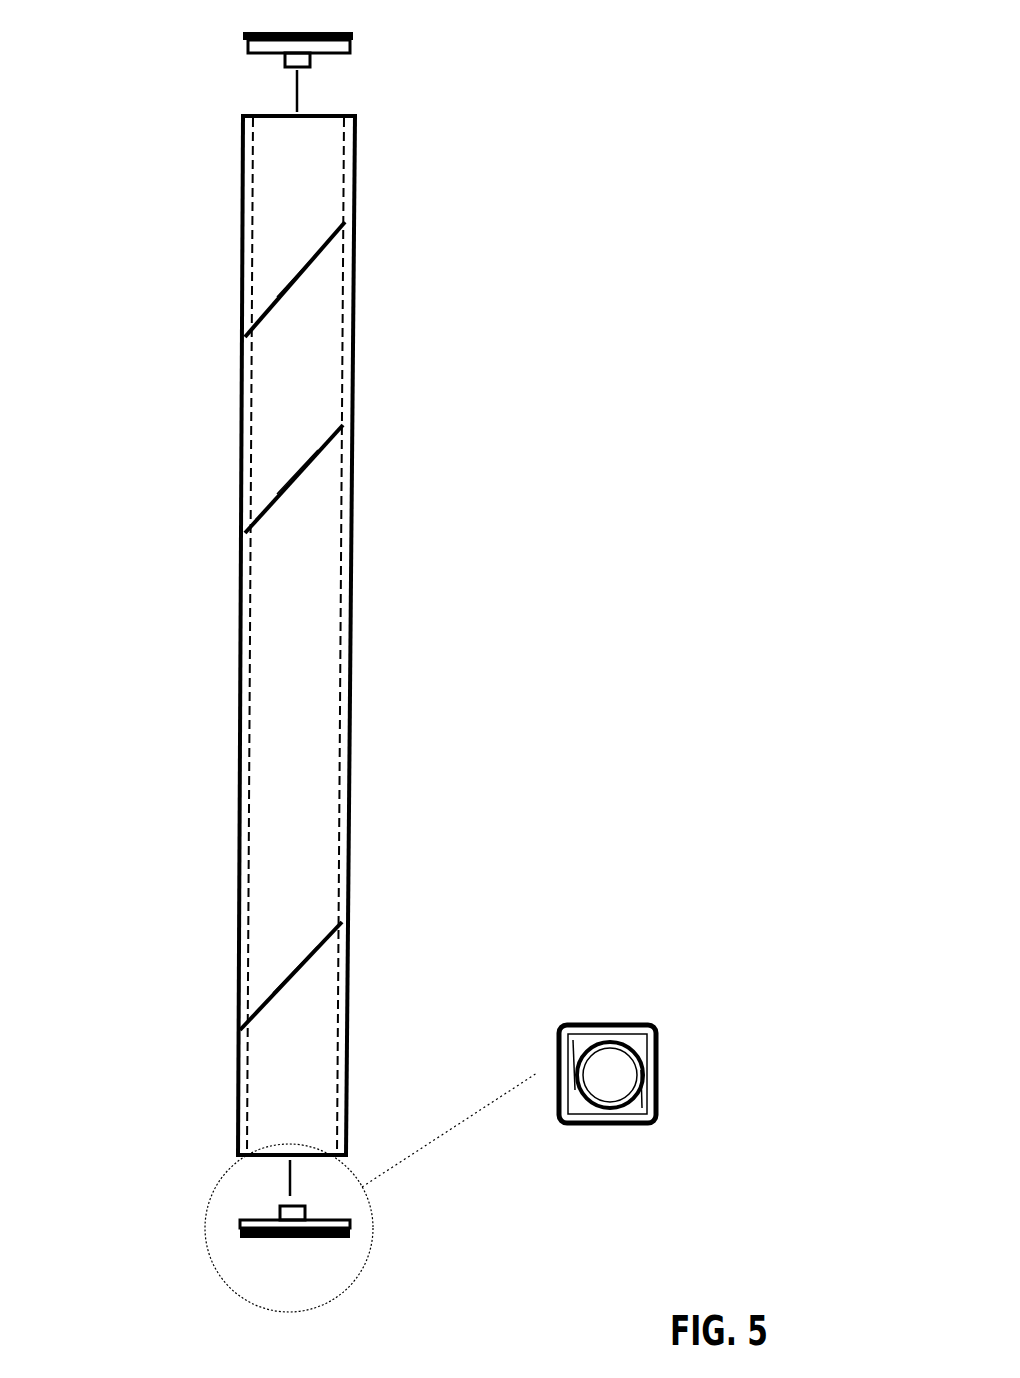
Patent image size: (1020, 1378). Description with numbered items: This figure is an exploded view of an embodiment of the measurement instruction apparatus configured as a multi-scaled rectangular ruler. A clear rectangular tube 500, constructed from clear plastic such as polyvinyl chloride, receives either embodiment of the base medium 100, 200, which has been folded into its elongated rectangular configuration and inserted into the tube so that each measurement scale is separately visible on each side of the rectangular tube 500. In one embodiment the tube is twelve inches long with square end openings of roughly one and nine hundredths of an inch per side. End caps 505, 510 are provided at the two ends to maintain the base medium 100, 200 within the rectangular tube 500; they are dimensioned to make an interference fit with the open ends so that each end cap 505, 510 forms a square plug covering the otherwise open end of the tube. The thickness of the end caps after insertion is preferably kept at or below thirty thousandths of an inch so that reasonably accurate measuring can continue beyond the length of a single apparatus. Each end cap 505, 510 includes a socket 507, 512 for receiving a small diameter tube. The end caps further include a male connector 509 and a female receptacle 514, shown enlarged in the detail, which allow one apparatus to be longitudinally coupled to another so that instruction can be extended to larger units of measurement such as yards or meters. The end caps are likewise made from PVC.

The rectangular tube 500 is at (353, 342).
The base medium 100 is at (348, 902).
The base medium 200 is at (392, 626).
The male connector 509 is at (300, 24).
The end cap 505 is at (350, 53).
The socket 507 is at (283, 67).
The socket 512 is at (280, 1206).
The end cap 510 is at (305, 1238).
The female receptacle 514 is at (655, 1098).